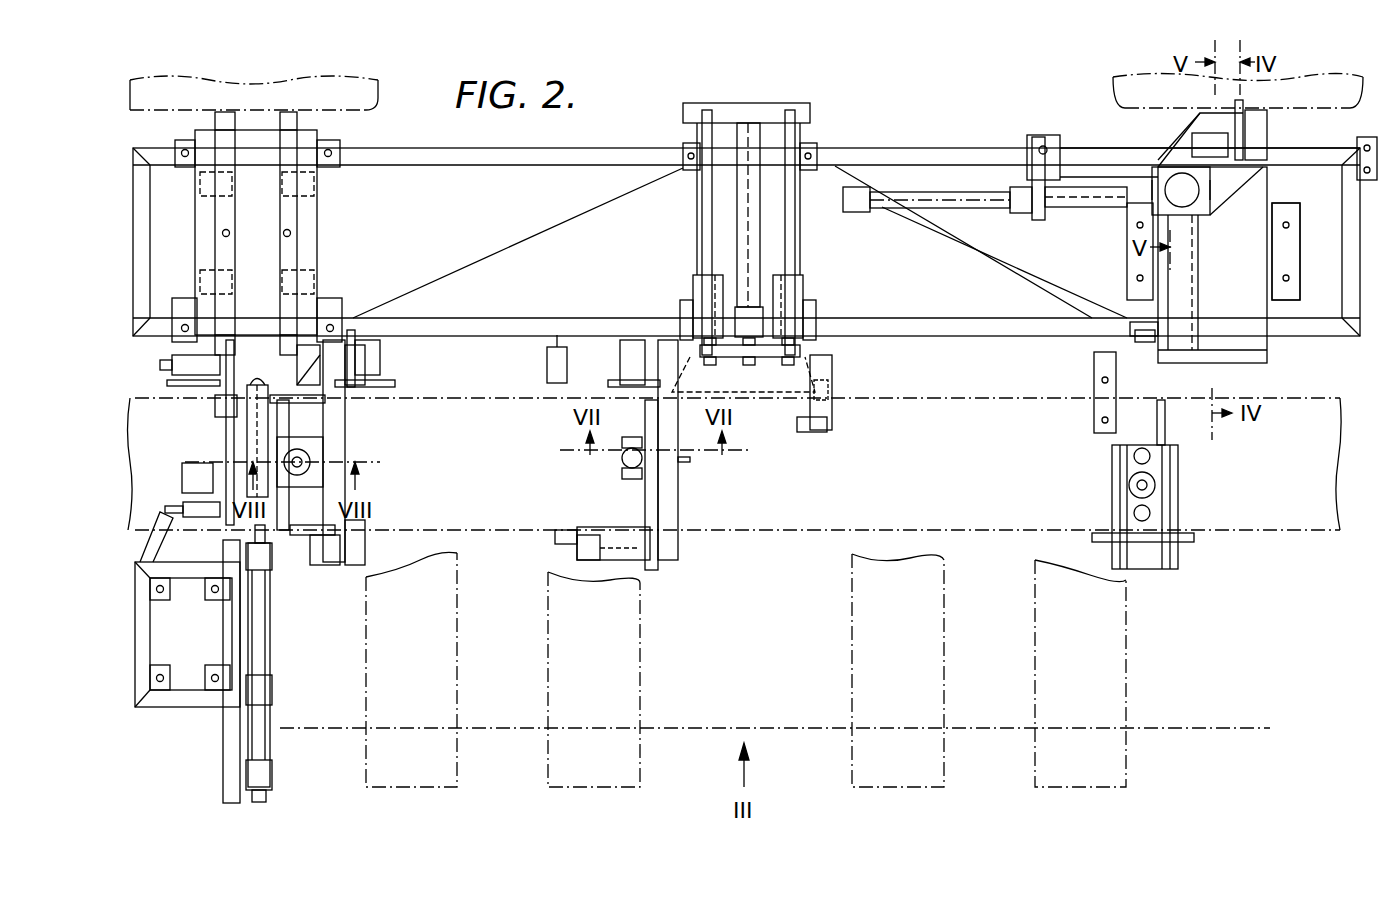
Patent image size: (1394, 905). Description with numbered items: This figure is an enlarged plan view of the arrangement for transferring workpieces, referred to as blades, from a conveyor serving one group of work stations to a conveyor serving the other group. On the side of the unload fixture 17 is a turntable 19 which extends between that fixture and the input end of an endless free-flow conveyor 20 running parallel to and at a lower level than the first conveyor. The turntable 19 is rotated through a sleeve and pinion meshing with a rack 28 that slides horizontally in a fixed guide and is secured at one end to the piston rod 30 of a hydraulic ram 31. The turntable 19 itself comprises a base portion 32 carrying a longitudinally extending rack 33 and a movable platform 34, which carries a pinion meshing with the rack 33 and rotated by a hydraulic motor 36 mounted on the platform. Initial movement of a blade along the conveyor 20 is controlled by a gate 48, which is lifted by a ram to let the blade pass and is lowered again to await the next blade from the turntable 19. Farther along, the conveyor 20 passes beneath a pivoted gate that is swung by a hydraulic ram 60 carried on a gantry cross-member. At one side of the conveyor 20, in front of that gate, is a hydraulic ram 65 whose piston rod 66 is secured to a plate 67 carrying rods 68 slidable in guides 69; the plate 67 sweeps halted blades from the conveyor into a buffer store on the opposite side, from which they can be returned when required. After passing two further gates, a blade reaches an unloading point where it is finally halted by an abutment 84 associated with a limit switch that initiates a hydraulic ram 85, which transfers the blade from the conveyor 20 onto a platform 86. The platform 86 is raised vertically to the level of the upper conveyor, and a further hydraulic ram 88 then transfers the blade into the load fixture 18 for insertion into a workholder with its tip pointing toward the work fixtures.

The unload fixture 17 is at (1135, 85).
The load fixture 18 is at (362, 110).
The turntable 19 is at (1252, 330).
The endless free-flow conveyor 20 is at (992, 425).
The rack 28 is at (1093, 207).
The piston rod 30 is at (1055, 205).
The hydraulic ram 31 is at (937, 200).
The base portion 32 is at (1258, 268).
The rack 33 is at (1163, 345).
The movable platform 34 is at (1143, 168).
The hydraulic motor 36 is at (1192, 200).
The gate 48 is at (1160, 400).
The hydraulic ram 60 is at (625, 465).
The hydraulic ram 65 is at (745, 222).
The piston rod 66 is at (757, 343).
The plate 67 is at (840, 392).
The rods 68 is at (707, 248).
The guides 69 is at (700, 305).
The abutment 84 is at (230, 440).
The hydraulic ram 85 is at (258, 626).
The platform 86 is at (287, 252).
The hydraulic ram 88 is at (258, 413).